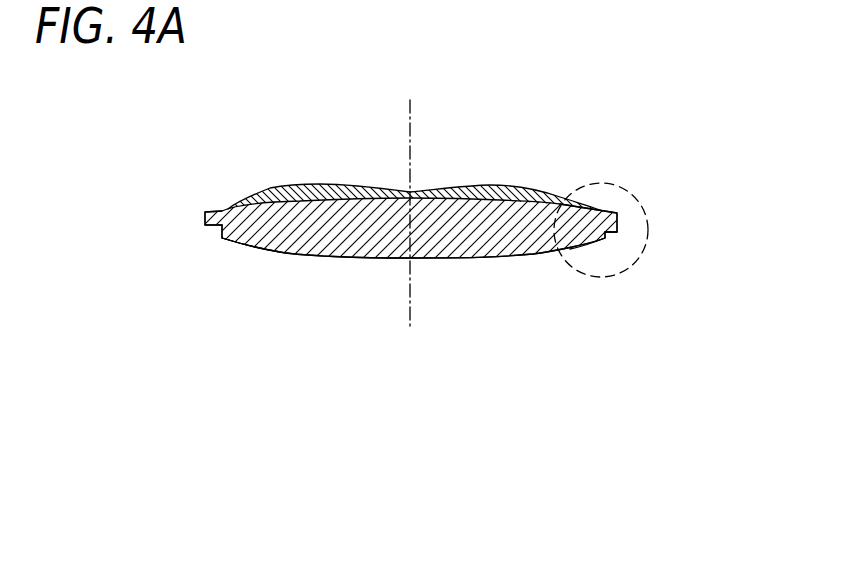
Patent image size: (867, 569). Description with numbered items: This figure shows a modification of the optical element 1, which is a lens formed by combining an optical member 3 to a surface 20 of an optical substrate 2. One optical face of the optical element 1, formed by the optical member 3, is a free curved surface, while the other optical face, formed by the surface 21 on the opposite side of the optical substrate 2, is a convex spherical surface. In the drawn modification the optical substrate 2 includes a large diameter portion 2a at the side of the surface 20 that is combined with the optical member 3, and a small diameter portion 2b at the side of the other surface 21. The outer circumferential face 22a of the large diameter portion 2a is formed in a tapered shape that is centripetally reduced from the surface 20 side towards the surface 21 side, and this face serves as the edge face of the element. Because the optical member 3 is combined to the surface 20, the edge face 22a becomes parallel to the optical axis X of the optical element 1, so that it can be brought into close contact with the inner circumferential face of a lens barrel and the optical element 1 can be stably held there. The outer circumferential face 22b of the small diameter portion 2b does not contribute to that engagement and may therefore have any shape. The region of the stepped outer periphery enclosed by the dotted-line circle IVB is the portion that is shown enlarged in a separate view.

The optical element 1 is at (204, 192).
The optical substrate 2 is at (180, 243).
The large diameter portion 2a is at (205, 213).
The small diameter portion 2b is at (222, 238).
The optical member 3 is at (274, 188).
The surface 20 is at (500, 189).
The surface 21 is at (492, 258).
The outer circumferential face 22a is at (618, 222).
The outer circumferential face 22b is at (608, 238).
The optical axis X is at (406, 125).
The dotted-line circle IVB is at (622, 183).